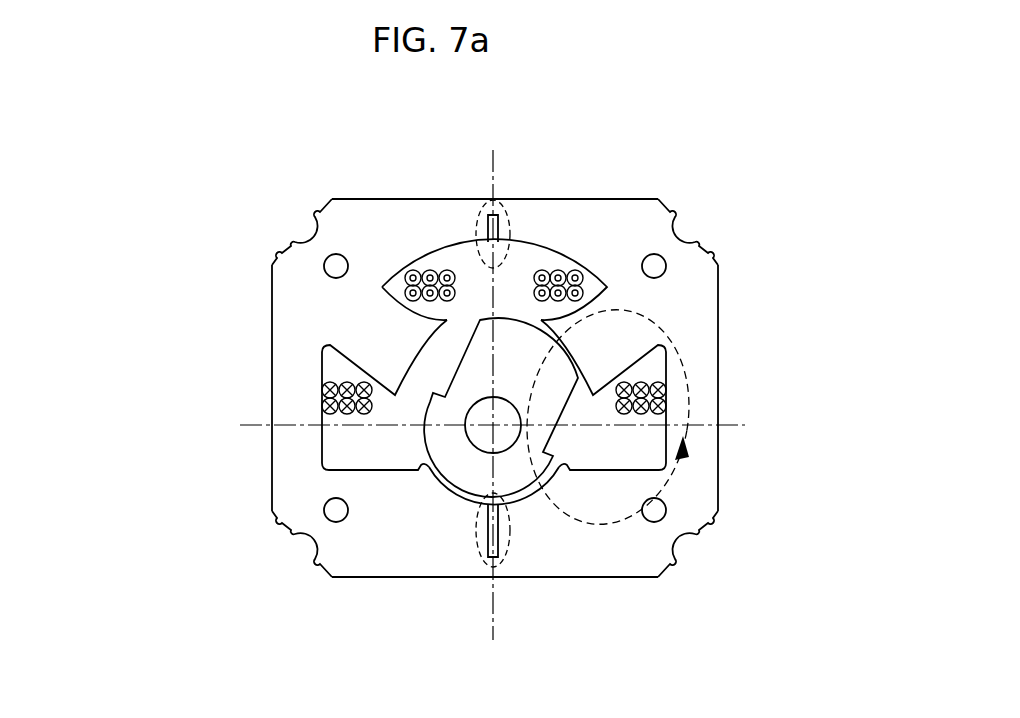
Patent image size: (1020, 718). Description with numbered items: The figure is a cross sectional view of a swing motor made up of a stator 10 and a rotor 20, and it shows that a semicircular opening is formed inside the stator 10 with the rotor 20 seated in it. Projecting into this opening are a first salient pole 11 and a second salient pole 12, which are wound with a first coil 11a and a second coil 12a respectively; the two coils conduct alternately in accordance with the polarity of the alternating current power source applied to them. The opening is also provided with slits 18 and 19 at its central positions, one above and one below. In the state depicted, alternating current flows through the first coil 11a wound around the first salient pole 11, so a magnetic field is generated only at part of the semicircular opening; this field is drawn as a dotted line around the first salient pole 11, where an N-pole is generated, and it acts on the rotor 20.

The stator 10 is at (272, 352).
The first salient pole 11 is at (607, 417).
The first coil 11a is at (580, 273).
The second salient pole 12 is at (384, 394).
The second coil 12a is at (325, 399).
The slit 18 is at (513, 212).
The slit 19 is at (508, 535).
The rotor 20 is at (501, 407).